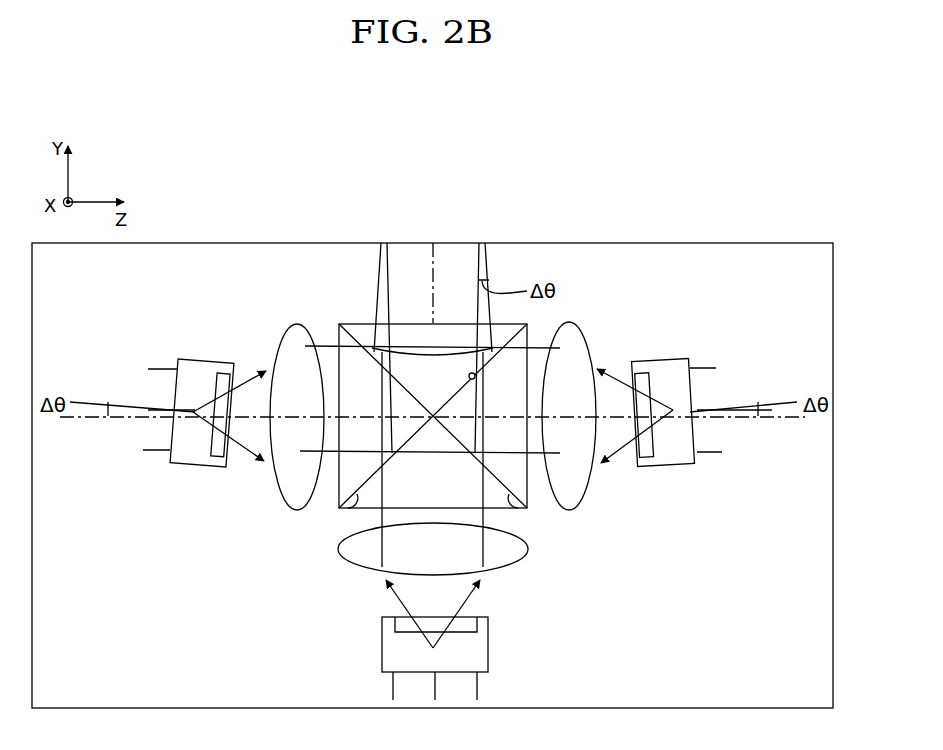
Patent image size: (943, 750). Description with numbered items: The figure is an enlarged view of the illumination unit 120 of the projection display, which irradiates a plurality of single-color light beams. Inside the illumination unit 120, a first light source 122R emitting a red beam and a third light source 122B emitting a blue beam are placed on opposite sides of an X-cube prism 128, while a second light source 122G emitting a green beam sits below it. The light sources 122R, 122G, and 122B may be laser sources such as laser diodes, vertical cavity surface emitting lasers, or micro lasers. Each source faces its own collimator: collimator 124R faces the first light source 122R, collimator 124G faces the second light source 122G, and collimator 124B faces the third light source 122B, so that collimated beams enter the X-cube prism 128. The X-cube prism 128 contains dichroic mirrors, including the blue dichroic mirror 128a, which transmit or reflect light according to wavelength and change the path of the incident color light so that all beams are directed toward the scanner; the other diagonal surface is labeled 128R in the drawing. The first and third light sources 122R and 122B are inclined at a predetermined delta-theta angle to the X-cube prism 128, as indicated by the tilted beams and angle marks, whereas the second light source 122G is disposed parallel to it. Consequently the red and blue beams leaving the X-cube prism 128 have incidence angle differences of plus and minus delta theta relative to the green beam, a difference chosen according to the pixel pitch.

The illumination unit 120 is at (745, 222).
The third light source 122B is at (193, 464).
The first light source 122R is at (682, 454).
The second light source 122G is at (478, 651).
The collimator 124B is at (302, 337).
The collimator 124R is at (583, 485).
The collimator 124G is at (515, 548).
The X-cube prism 128 is at (355, 323).
The blue dichroic mirror 128a is at (350, 504).
The red-reflecting dichroic surface of prism 128R is at (523, 497).